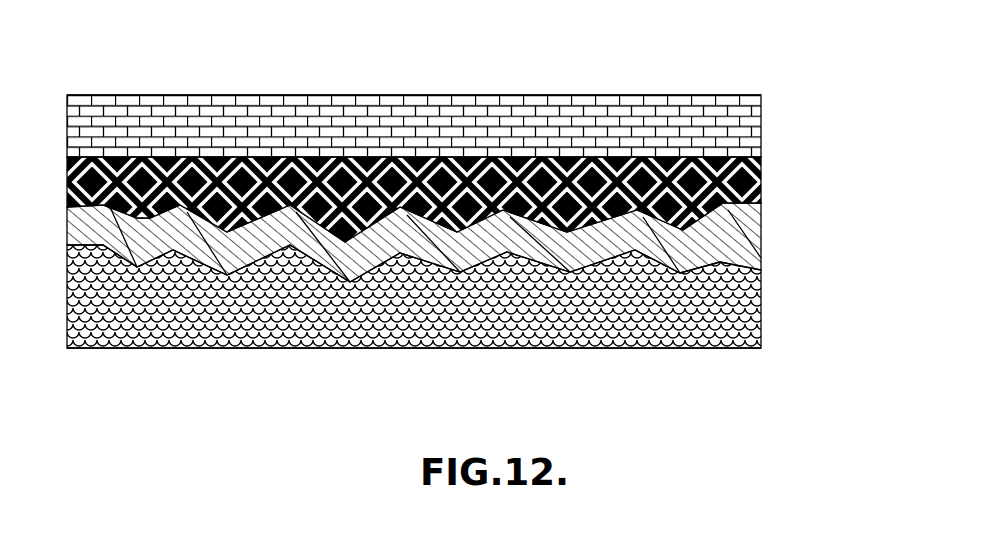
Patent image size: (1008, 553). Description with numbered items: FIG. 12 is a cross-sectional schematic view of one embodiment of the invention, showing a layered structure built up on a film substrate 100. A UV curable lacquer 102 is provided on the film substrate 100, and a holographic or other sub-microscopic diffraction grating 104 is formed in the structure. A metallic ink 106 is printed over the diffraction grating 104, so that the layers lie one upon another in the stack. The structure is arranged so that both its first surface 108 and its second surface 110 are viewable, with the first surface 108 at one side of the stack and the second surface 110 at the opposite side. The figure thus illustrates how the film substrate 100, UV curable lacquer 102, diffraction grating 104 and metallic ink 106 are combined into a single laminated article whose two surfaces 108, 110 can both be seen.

The film substrate 100 is at (665, 128).
The UV curable lacquer 102 is at (722, 190).
The holographic or other sub-microscopic diffraction grating 104 is at (716, 245).
The metallic ink 106 is at (730, 318).
The first surface 108 is at (346, 370).
The second surface 110 is at (340, 76).